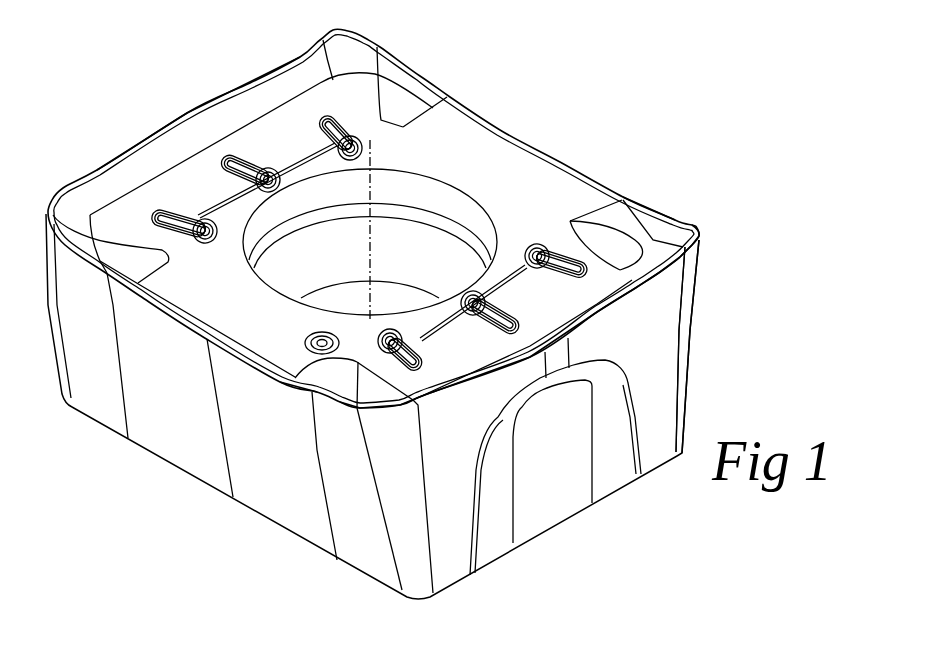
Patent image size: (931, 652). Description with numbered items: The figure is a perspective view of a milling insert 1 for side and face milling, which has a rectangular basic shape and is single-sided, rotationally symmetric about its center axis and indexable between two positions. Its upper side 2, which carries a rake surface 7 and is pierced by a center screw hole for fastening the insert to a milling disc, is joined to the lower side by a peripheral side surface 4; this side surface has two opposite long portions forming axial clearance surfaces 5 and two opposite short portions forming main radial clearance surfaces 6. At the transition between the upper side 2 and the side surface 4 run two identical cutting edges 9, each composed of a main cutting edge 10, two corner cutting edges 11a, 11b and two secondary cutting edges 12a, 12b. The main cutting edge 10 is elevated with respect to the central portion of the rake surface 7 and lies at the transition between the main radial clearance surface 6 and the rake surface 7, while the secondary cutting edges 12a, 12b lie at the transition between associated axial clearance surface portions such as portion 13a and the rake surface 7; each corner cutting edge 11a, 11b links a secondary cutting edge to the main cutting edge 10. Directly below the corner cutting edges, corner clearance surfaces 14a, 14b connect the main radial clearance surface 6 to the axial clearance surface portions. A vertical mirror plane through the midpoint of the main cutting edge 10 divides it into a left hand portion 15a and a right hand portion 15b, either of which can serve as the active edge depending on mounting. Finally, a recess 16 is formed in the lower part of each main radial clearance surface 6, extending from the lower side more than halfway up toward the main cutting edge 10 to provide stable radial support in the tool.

The milling insert 1 is at (459, 69).
The upper side 2 is at (468, 145).
The peripheral side surface 4 is at (282, 470).
The axial clearance surface 5 is at (175, 405).
The main radial clearance surface 6 is at (461, 498).
The rake surface 7 is at (551, 308).
The cutting edge 9 is at (208, 112).
The main cutting edge 10 is at (645, 279).
The corner cutting edge 11a is at (393, 410).
The corner cutting edge 11b is at (698, 230).
The secondary cutting edge 12a is at (337, 402).
The secondary cutting edge 12b is at (663, 214).
The axial clearance surface portion 13a is at (376, 521).
The corner clearance surface 14a is at (421, 471).
The corner clearance surface 14b is at (693, 295).
The left hand portion of the main cutting edge 15a is at (440, 389).
The right hand portion of the main cutting edge 15b is at (670, 258).
The recess 16 is at (612, 453).